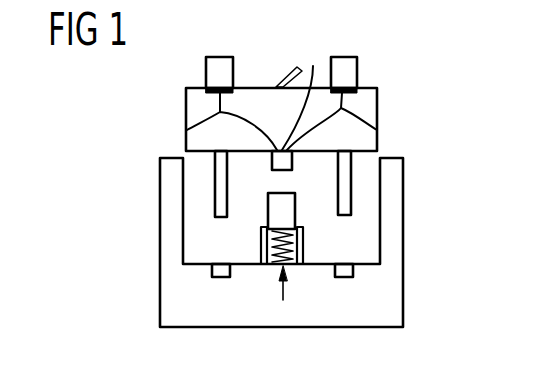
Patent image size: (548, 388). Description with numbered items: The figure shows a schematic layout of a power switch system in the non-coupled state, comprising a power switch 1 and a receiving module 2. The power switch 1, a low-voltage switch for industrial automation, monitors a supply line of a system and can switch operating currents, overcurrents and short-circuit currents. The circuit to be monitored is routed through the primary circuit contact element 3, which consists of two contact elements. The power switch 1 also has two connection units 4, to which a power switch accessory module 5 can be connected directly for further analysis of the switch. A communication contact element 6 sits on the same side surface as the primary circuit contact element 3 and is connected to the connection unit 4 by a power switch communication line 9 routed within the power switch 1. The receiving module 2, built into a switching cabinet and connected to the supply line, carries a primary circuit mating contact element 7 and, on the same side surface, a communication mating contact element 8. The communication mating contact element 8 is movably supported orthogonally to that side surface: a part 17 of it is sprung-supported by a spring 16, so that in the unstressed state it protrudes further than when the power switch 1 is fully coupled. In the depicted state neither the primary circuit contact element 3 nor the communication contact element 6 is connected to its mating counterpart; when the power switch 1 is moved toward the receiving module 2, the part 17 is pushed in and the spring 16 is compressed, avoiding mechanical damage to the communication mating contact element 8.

The power switch 1 is at (256, 88).
The receiving module 2 is at (160, 232).
The primary circuit contact element 3 is at (215, 189).
The connection unit 4 is at (213, 92).
The power switch accessory module 5 is at (206, 71).
The communication contact element 6 is at (295, 106).
The primary circuit mating contact element 7 is at (221, 278).
The communication mating contact element 8 is at (283, 300).
The power switch communication line 9 is at (187, 129).
The spring 16 is at (287, 249).
The part of the communication mating contact element 17 is at (288, 218).